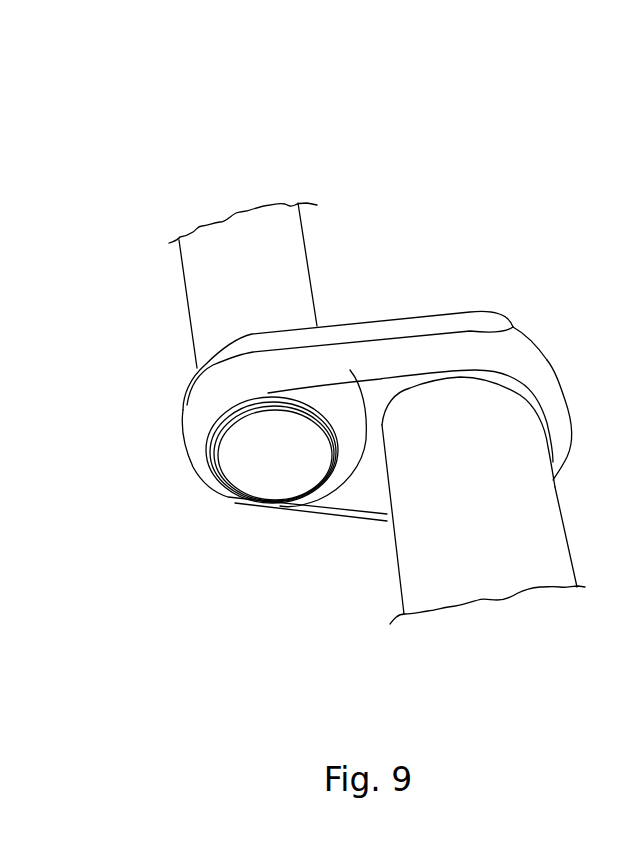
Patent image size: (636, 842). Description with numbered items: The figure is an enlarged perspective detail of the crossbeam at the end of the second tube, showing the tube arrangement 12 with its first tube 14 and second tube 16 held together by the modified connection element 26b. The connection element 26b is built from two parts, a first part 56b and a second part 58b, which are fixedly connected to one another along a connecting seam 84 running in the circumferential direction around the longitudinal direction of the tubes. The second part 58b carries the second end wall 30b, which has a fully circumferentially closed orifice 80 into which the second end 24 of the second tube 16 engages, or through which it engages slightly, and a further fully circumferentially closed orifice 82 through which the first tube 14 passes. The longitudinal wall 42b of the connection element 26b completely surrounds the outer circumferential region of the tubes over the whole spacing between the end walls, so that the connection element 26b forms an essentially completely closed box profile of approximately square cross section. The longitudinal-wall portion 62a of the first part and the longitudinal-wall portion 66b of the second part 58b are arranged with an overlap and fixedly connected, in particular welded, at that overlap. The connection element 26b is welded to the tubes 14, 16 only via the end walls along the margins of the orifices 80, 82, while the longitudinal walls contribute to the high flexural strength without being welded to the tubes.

The tube arrangement 12 is at (337, 130).
The first tube 14 is at (535, 535).
The second tube 16 is at (203, 265).
The second end 24 is at (233, 503).
The connection element 26b is at (475, 296).
The second end wall 30b is at (360, 497).
The longitudinal wall 42b is at (232, 374).
The first part 56b is at (376, 305).
The second part 58b is at (182, 478).
The flat top surface 62a is at (410, 323).
The longitudinal-wall portion 66b is at (314, 497).
The orifice 80 is at (315, 400).
The further orifice 82 is at (533, 393).
The connecting seam 84 is at (513, 327).